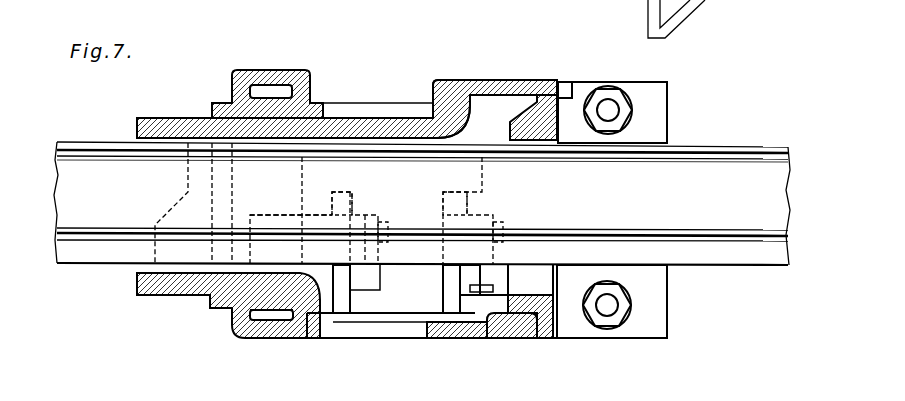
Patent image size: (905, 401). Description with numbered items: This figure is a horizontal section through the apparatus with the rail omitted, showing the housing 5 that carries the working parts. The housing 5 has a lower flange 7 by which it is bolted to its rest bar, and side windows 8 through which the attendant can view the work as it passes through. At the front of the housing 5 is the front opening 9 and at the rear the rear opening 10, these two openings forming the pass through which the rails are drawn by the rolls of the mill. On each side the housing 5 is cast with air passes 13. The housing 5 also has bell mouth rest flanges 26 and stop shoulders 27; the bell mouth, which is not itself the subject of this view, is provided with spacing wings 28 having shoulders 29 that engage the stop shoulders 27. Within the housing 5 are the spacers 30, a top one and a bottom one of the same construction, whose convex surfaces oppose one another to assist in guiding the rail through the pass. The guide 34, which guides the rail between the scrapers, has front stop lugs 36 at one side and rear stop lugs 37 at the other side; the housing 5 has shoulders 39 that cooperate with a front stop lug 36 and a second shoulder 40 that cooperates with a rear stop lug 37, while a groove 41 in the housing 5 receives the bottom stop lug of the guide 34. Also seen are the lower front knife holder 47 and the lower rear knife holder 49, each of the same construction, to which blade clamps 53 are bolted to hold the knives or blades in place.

The housing 5 is at (479, 80).
The lower flange 7 is at (668, 300).
The side windows 8 is at (384, 110).
The front opening 9 is at (540, 137).
The rear opening 10 is at (226, 306).
The air passes 13 is at (323, 101).
The bell mouth rest flanges 26 is at (432, 340).
The stop shoulders 27 is at (536, 82).
The spacing wings 28 is at (510, 297).
The shoulders 29 is at (497, 340).
The spacers 30 is at (396, 289).
The guide 34 is at (176, 110).
The front stop lugs 36 is at (478, 110).
The rear stop lugs 37 is at (324, 320).
The shoulders 39 is at (441, 102).
The second shoulder 40 is at (298, 322).
The groove 41 is at (262, 178).
The lower front knife holder 47 is at (456, 208).
The lower rear knife holder 49 is at (337, 205).
The blade clamps 53 is at (385, 262).